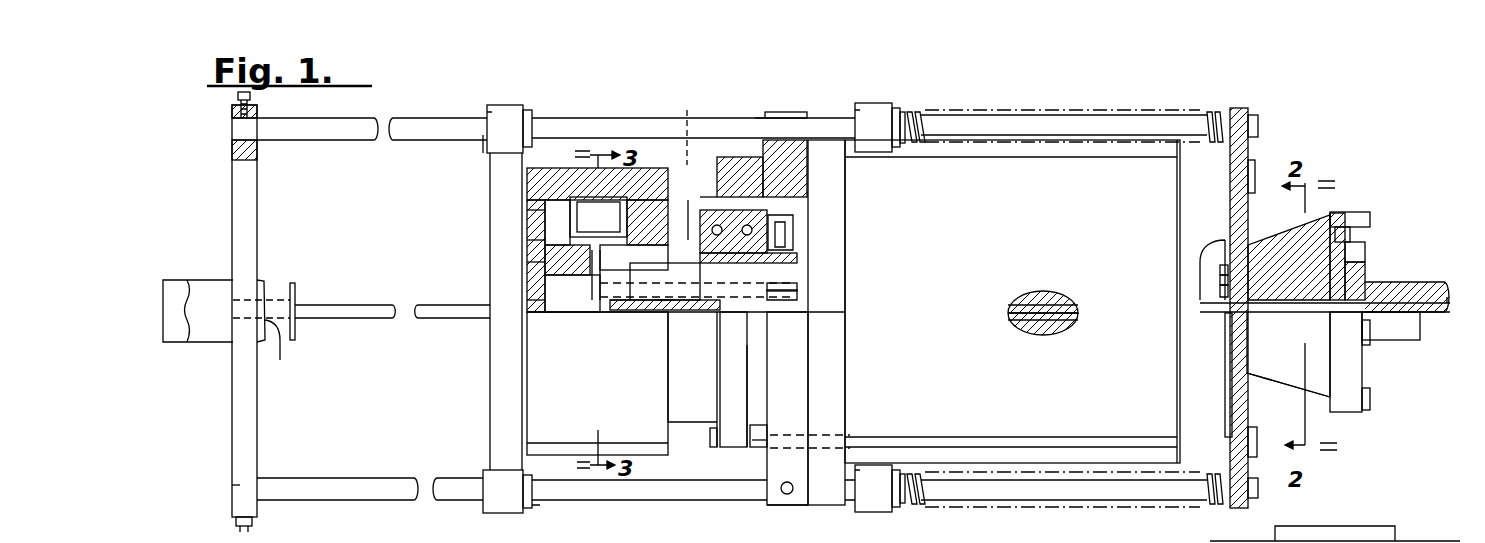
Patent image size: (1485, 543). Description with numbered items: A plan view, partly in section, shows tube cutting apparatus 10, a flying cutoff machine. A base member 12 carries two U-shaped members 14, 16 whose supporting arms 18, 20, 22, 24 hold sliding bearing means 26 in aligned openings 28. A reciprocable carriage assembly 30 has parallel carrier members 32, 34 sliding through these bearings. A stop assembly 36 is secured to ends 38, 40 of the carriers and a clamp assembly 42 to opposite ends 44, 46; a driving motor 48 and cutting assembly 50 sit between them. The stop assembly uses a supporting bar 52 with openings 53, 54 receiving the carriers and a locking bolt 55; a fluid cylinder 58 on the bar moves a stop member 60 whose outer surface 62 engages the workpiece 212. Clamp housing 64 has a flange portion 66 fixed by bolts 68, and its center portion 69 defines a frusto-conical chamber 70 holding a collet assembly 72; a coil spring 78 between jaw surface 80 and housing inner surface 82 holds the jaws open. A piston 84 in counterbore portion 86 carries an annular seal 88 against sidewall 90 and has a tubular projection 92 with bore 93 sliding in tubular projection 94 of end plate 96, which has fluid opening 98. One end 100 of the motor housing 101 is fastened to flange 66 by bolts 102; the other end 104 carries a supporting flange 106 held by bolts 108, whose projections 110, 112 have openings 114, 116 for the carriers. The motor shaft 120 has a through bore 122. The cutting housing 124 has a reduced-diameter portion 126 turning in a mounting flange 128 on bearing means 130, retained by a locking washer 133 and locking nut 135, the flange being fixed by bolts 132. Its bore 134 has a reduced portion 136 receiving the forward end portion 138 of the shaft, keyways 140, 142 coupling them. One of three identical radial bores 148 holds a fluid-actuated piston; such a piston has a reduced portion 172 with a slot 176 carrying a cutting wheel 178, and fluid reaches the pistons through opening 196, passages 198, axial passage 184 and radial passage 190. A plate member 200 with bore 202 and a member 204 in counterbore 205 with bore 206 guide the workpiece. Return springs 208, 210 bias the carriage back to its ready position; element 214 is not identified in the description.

The tube cutting apparatus 10 is at (810, 96).
The base member 12 is at (675, 480).
The U-shaped member 14 is at (490, 385).
The U-shaped member 16 is at (883, 157).
The supporting arm 18 is at (500, 505).
The supporting arm 20 is at (505, 105).
The supporting arm 22 is at (873, 512).
The supporting arm 24 is at (872, 110).
The sliding bearing means 26 is at (487, 110).
The openings 28 is at (487, 145).
The reciprocable carriage assembly 30 is at (1112, 100).
The carrier member 32 is at (347, 118).
The carrier member 34 is at (338, 478).
The stop assembly 36 is at (265, 262).
The end of carrier member 38 is at (240, 128).
The end of carrier member 40 is at (232, 482).
The clamp assembly 42 is at (1355, 196).
The end portion of carrier member 44 is at (1213, 120).
The end portion of carrier member 46 is at (1205, 492).
The driving motor 48 is at (1005, 389).
The cutting assembly 50 is at (655, 165).
The supporting bar 52 is at (240, 191).
The opening 53 is at (232, 140).
The opening 54 is at (232, 498).
The threaded locking bolt 55 is at (252, 104).
The fluid pressure actuable cylinder 58 is at (216, 280).
The stop member 60 is at (266, 285).
The workpiece engaging outer surface 62 is at (280, 348).
The clamp housing 64 is at (1268, 252).
The flange portion 66 is at (1255, 150).
The bolts 68 is at (1258, 122).
The center portion 69 is at (1280, 385).
The frusto conically shaped chamber 70 is at (1222, 252).
The collet assembly 72 is at (1222, 281).
The coil spring 78 is at (1220, 292).
The forwardly facing surface 80 is at (1255, 312).
The inner surface 82 is at (1220, 268).
The piston 84 is at (1347, 240).
The counterbore portion 86 is at (1365, 280).
The annular seal 88 is at (1372, 220).
The sidewall 90 is at (1348, 226).
The tubular projection 92 is at (1350, 312).
The bore 93 is at (1447, 305).
The tubular projection 94 is at (1400, 290).
The end plate 96 is at (1362, 382).
The opening 98 is at (1365, 251).
The end of motor housing 100 is at (1230, 393).
The motor housing 101 is at (1038, 160).
The bolts 102 is at (1257, 442).
The end of motor housing 104 is at (846, 386).
The supporting flange 106 is at (798, 379).
The bolts 108 is at (755, 450).
The projection 110 is at (778, 507).
The projection 112 is at (782, 112).
The opening 114 is at (765, 120).
The opening 116 is at (800, 500).
The shaft 120 is at (1047, 290).
The bore 122 is at (1058, 335).
The housing 124 is at (605, 414).
The axially outwardly projecting portion 126 is at (800, 268).
The mounting flange 128 is at (735, 445).
The bearing means 130 is at (805, 190).
The bolts 132 is at (735, 175).
The locking washer 133 is at (790, 225).
The bore 134 is at (527, 242).
The locking nut 135 is at (790, 245).
The reduced diameter portion 136 is at (800, 292).
The forward end portion 138 is at (722, 305).
The keyway 140 is at (705, 300).
The keyway 142 is at (772, 286).
The radially extending bore 148 is at (492, 535).
The reduced diameter portion 172 is at (527, 215).
The slot 176 is at (580, 320).
The cutting wheel 178 is at (590, 312).
The fluid passage 184 is at (645, 310).
The passage 190 is at (1275, 541).
The opening 196 is at (695, 200).
The passages 198 is at (720, 195).
The plate member 200 is at (527, 260).
The bore 202 is at (527, 300).
The cylindrically shaped member 204 is at (628, 318).
The counterbore 205 is at (705, 318).
The bore 206 is at (662, 315).
The helical coil spring 208 is at (915, 125).
The helical coil spring 210 is at (918, 496).
The workpiece 212 is at (360, 305).
The plate 214 is at (298, 300).